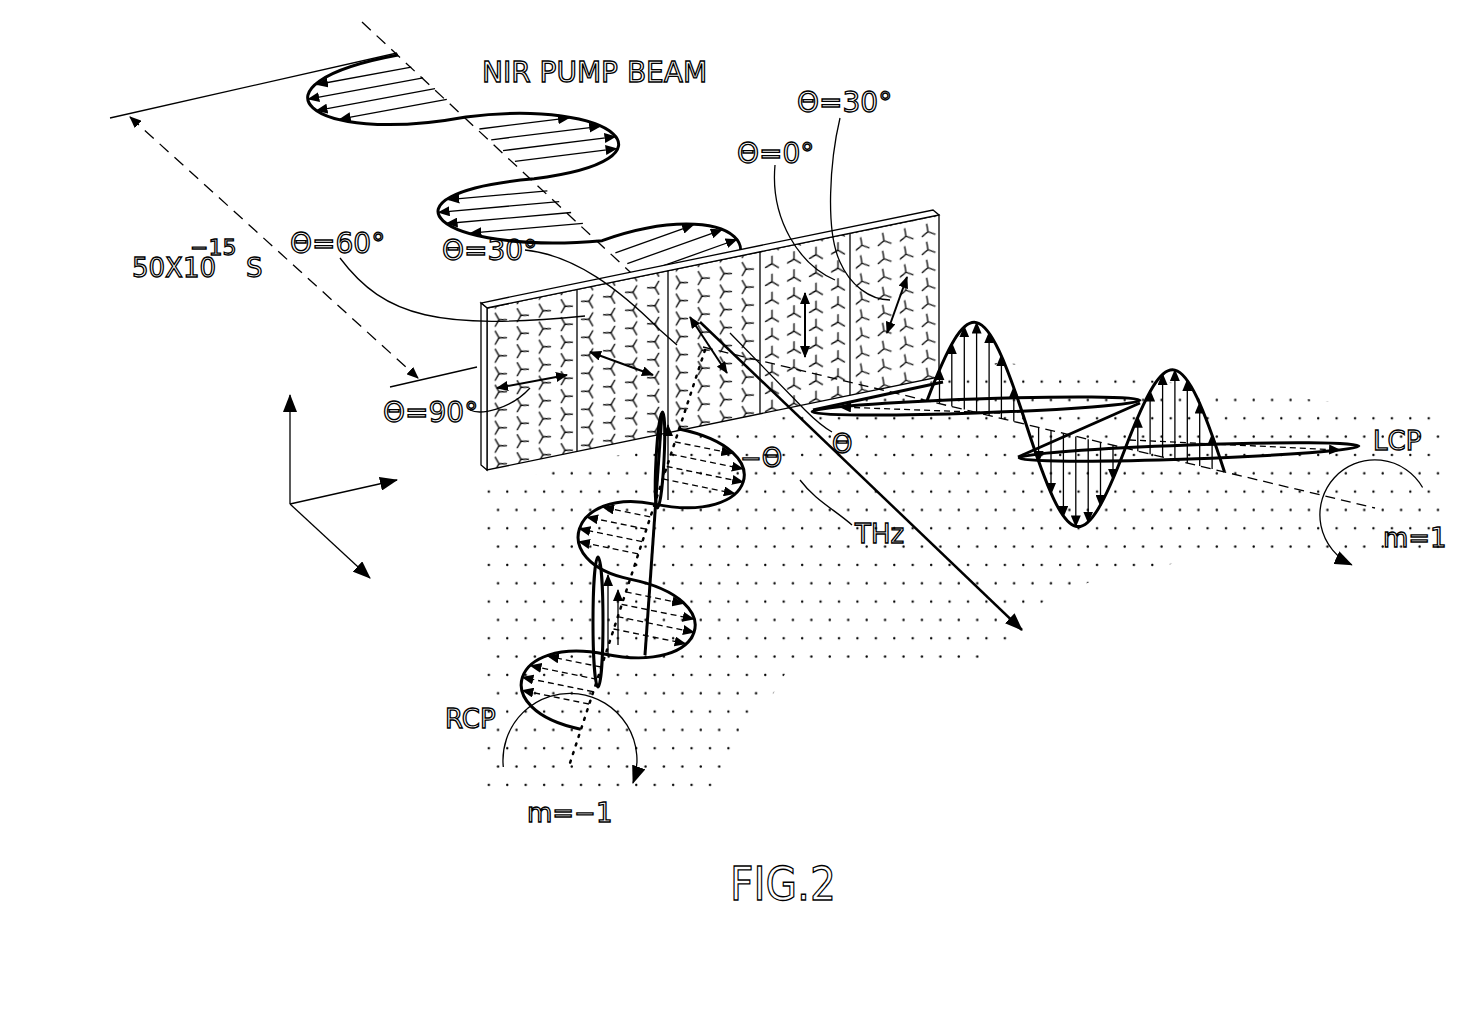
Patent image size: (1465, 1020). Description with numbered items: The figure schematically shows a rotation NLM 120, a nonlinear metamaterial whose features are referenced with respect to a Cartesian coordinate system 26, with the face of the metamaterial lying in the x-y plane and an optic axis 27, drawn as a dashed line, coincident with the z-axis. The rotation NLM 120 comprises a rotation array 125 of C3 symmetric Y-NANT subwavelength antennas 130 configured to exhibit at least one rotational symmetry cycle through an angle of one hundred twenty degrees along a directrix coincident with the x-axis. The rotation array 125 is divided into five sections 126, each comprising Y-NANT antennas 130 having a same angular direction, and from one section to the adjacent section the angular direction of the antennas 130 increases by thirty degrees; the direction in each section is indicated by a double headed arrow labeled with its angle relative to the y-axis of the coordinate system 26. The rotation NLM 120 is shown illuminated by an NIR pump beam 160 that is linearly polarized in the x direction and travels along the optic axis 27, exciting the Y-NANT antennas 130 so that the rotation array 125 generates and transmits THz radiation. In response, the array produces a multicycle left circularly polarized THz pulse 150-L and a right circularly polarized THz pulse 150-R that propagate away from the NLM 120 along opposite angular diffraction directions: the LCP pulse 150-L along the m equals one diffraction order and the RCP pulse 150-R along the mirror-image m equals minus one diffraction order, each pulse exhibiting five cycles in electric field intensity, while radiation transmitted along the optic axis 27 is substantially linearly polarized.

The NIR pump beam 160 is at (372, 147).
The optic axis 27 is at (500, 130).
The rotation NLM 120 is at (877, 175).
The Y-NANT subwavelength antennas 130 is at (937, 214).
The rotation array 125 is at (942, 236).
The sections 126 is at (850, 372).
The Cartesian coordinate system 26 is at (290, 504).
The RCP THz radiation pulse 150-R is at (570, 535).
The LCP THz radiation pulse 150-L is at (1203, 360).